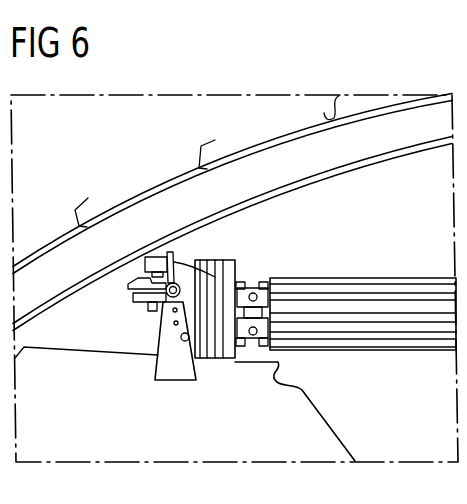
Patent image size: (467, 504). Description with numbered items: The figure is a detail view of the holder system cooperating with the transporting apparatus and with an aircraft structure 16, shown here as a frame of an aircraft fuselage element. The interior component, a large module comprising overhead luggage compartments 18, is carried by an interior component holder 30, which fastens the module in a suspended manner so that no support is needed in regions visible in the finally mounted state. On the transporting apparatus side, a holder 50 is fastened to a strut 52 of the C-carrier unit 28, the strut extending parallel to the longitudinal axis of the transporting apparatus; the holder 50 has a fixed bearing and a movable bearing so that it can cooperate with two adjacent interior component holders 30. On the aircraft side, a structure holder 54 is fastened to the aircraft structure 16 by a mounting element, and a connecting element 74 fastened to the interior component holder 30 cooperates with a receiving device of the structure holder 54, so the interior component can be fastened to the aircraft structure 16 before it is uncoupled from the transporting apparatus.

The aircraft structure 16 is at (152, 194).
The overhead luggage compartment 18 is at (325, 428).
The C-carrier unit 28 is at (357, 296).
The interior component holder 30 is at (140, 378).
The holder 50 is at (209, 386).
The strut 52 is at (160, 244).
The structure holder 54 is at (195, 248).
The connecting element 74 is at (120, 301).